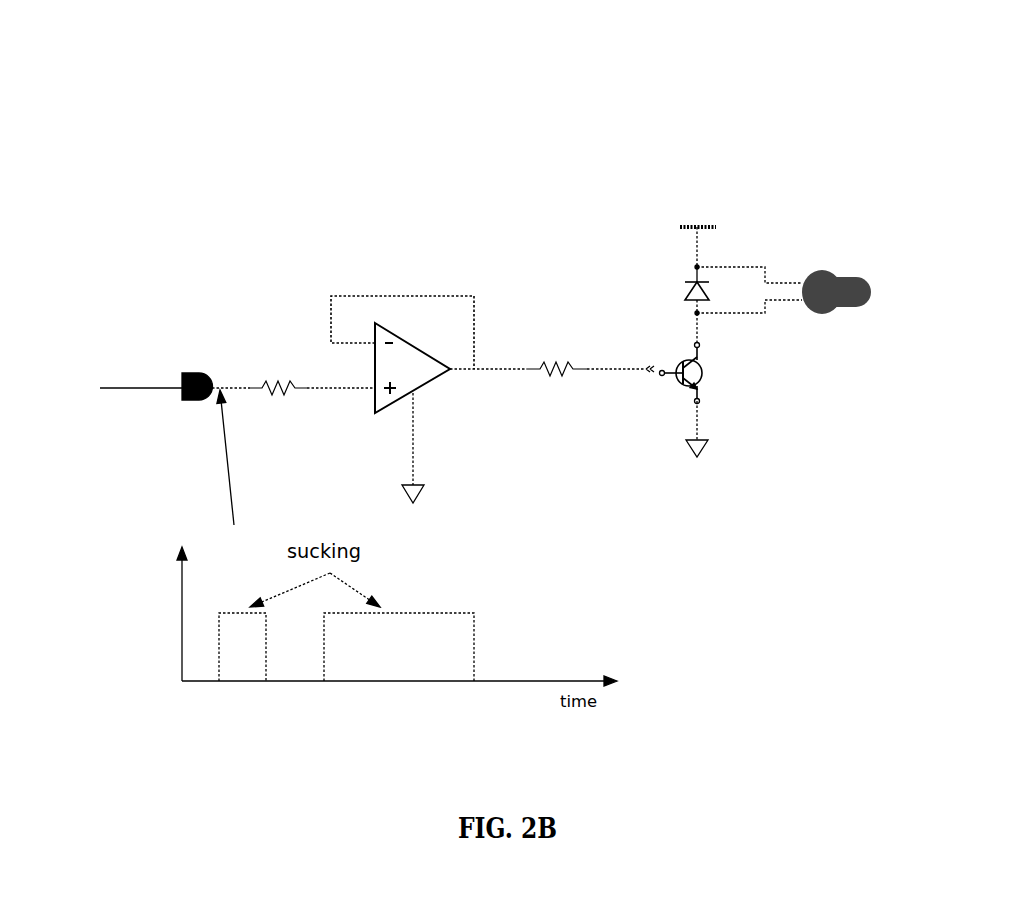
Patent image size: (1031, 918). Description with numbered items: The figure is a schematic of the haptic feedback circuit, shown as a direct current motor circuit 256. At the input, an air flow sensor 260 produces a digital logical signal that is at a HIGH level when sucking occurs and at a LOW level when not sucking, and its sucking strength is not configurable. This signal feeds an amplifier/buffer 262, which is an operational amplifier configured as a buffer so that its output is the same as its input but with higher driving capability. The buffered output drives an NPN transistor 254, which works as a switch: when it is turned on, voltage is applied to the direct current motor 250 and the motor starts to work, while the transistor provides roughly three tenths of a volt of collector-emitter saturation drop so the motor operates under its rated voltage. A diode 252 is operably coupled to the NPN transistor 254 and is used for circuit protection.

The direct current motor circuit 256 is at (322, 109).
The air flow sensor 260 is at (136, 383).
The amplifier/buffer 262 is at (322, 268).
The diode 252 is at (667, 273).
The NPN transistor 254 is at (719, 407).
The direct current motor 250 is at (896, 289).